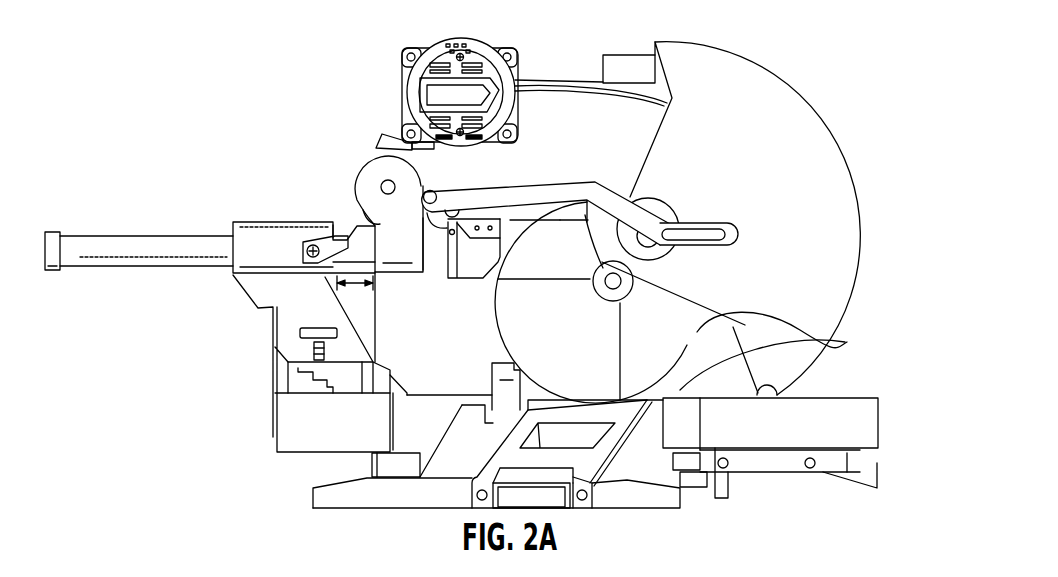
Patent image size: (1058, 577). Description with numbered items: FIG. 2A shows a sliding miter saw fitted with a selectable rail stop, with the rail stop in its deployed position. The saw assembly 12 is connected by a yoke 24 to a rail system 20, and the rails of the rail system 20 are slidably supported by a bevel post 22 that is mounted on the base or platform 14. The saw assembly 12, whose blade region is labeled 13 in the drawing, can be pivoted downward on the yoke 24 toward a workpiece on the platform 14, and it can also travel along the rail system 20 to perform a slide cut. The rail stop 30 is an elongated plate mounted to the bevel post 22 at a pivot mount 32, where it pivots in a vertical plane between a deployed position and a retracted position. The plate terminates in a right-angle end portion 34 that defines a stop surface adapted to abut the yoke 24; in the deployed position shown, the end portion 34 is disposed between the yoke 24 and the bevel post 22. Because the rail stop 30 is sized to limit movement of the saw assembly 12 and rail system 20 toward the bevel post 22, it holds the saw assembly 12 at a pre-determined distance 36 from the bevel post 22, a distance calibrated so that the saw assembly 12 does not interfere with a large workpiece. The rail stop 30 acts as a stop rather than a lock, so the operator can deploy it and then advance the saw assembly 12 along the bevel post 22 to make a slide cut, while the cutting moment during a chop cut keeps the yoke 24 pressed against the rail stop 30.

The saw assembly 12 is at (553, 80).
The saw blade 13 is at (845, 342).
The platform 14 is at (832, 397).
The rail system 20 is at (148, 236).
The bevel post 22 is at (257, 293).
The yoke 24 is at (370, 168).
The rail stop 30 is at (333, 222).
The pivot mount 32 is at (303, 247).
The end portion 34 is at (361, 214).
The distance 36 is at (358, 288).